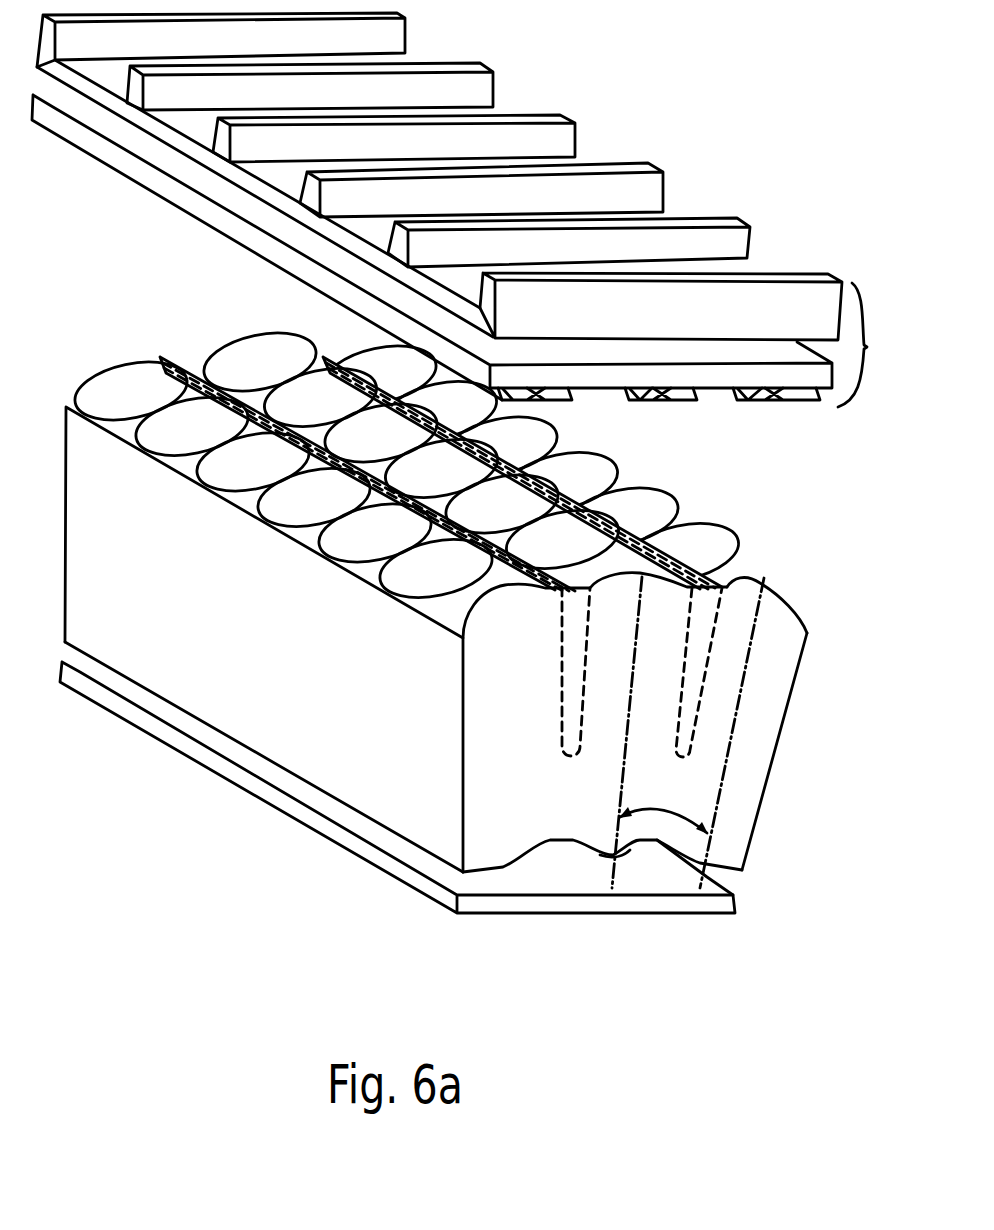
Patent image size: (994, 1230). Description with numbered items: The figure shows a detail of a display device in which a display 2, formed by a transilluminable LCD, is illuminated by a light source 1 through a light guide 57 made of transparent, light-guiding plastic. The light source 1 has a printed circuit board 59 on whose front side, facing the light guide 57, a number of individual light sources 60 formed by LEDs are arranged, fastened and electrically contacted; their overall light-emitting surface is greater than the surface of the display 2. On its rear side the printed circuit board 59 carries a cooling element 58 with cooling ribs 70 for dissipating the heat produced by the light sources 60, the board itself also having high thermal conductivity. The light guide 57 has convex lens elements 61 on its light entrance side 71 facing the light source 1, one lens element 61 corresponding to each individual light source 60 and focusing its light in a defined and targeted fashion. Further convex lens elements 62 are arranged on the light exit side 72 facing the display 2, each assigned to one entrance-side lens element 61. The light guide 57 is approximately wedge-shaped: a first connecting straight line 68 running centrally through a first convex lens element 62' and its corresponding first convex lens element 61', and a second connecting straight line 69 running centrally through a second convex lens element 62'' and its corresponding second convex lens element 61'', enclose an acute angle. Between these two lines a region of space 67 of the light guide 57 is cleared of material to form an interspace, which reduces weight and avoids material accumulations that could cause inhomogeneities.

The light source 1 is at (864, 345).
The display 2 is at (587, 900).
The light guide 57 is at (758, 817).
The cooling element 58 is at (574, 157).
The printed circuit board 59 is at (788, 370).
The individual light sources 60 is at (712, 402).
The convex lens elements 61 is at (336, 430).
The first convex lens element 61' is at (799, 584).
The second convex lens element 61'' is at (522, 473).
The convex lens elements 62 is at (602, 926).
The first convex lens element 62' is at (709, 926).
The second convex lens element 62'' is at (644, 931).
The region of space 67 is at (702, 633).
The first connecting straight line 68 is at (743, 695).
The second connecting straight line 69 is at (632, 715).
The cooling ribs 70 is at (642, 192).
The light entrance side 71 is at (115, 388).
The light exit side 72 is at (202, 740).